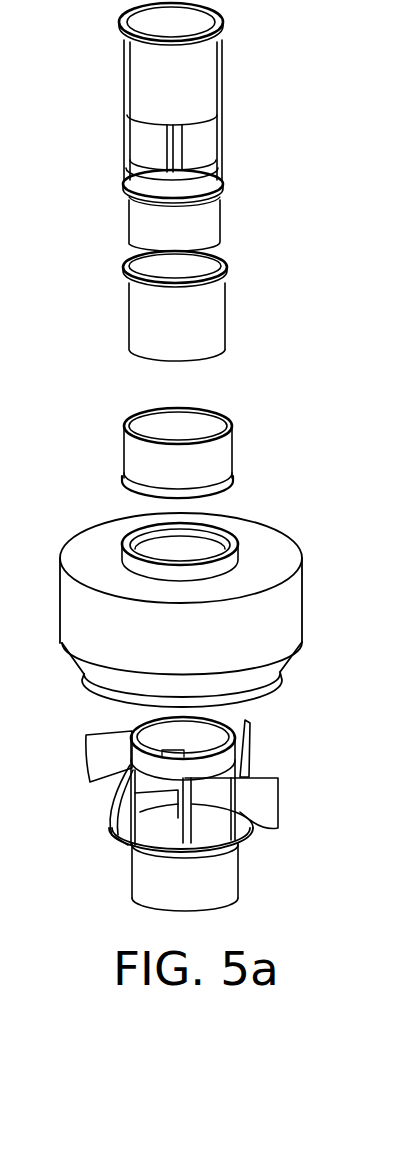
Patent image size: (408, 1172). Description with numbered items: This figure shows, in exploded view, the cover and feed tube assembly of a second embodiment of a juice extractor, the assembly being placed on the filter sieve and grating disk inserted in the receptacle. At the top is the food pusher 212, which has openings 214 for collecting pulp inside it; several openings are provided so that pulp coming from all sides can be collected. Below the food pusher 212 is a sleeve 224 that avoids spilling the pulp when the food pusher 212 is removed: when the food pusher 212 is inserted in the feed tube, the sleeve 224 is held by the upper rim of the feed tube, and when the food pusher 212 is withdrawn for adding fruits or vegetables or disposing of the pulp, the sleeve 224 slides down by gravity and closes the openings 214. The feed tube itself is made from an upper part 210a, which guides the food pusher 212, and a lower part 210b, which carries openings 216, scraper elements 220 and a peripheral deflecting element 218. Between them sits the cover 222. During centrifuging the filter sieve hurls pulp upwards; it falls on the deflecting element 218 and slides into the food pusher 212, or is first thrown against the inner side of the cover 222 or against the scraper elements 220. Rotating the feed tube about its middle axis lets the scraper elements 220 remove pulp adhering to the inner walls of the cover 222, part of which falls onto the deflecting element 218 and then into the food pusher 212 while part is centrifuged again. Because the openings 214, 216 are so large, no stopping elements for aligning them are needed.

The food pusher 212 is at (208, 75).
The openings 214 is at (150, 142).
The sleeve 224 is at (208, 312).
The upper part of the feed tube 210a is at (210, 458).
The cover 222 is at (92, 541).
The scraper elements 220 is at (263, 799).
The deflecting element 218 is at (258, 835).
The openings 216 is at (163, 825).
The lower part of the feed tube 210b is at (228, 883).